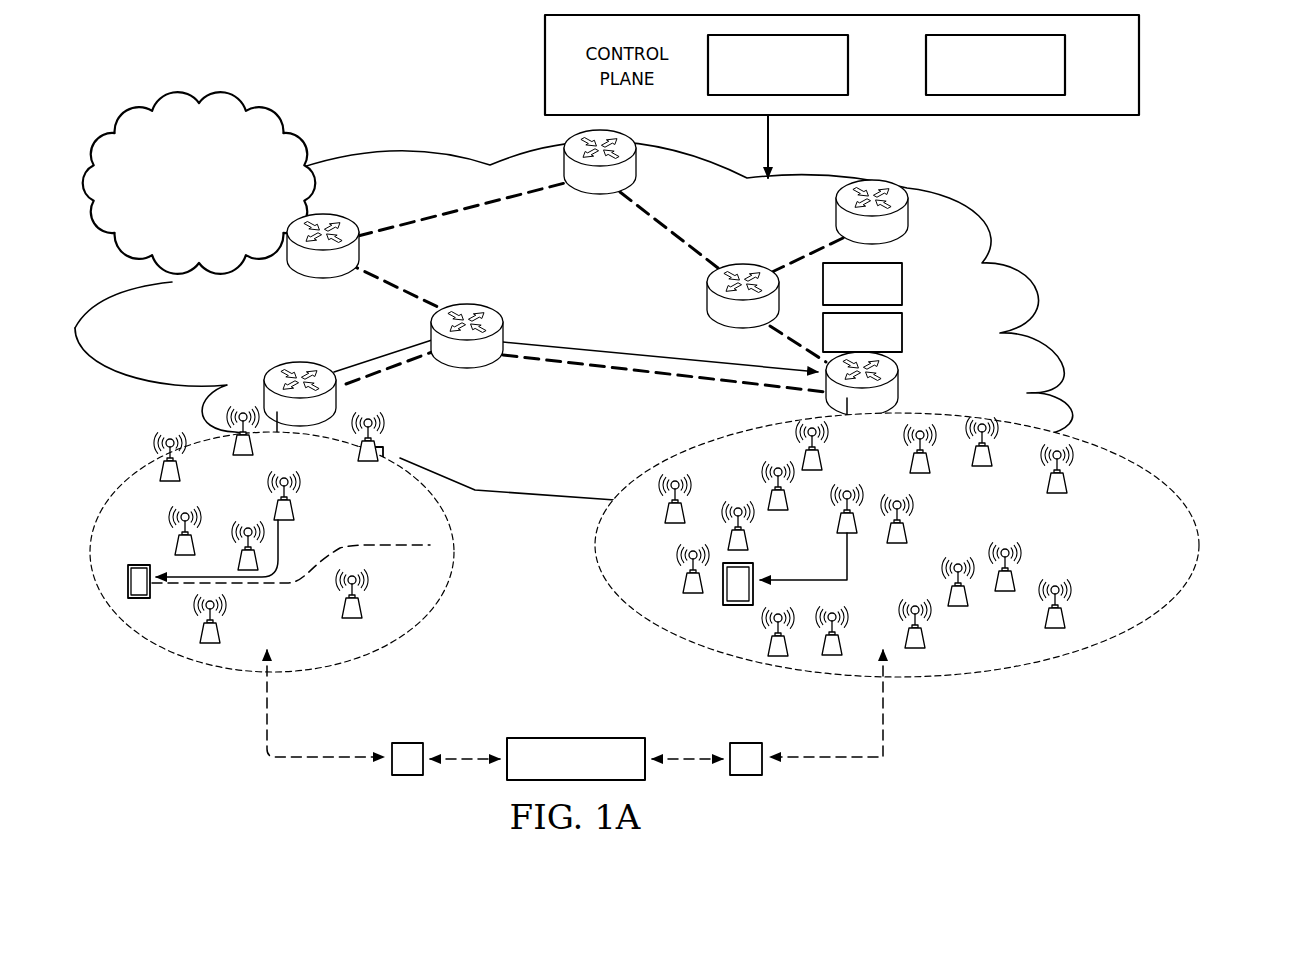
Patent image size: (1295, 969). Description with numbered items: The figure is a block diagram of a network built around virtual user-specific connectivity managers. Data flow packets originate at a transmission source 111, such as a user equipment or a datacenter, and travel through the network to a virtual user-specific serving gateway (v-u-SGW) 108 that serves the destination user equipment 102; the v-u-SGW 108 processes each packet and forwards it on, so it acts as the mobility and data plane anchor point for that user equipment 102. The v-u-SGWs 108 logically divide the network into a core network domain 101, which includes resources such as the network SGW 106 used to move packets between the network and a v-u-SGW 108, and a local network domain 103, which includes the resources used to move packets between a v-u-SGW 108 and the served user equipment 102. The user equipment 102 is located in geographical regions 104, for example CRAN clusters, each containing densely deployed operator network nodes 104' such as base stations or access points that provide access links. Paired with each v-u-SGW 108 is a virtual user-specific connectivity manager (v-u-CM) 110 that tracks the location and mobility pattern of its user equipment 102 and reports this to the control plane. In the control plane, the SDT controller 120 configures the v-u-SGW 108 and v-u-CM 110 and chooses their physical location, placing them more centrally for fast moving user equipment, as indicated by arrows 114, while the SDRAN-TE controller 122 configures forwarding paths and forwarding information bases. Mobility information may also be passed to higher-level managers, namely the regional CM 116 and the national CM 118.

The core network domain 101 is at (670, 315).
The user equipment 102 is at (139, 598).
The local network domain 103 is at (677, 568).
The geographical region 104 is at (644, 571).
The network node 104' is at (522, 614).
The network SGW 106 is at (466, 303).
The virtual user-specific serving gateway (v-u-SGW) 108 is at (902, 333).
The virtual user-specific connectivity manager (v-u-CM) 110 is at (902, 283).
The transmission source 111 is at (181, 215).
The arrows 114 is at (283, 583).
The regional CM 116 is at (405, 743).
The national CM 118 is at (575, 738).
The SDT controller 120 is at (849, 62).
The SDRAN-TE controller 122 is at (1066, 62).